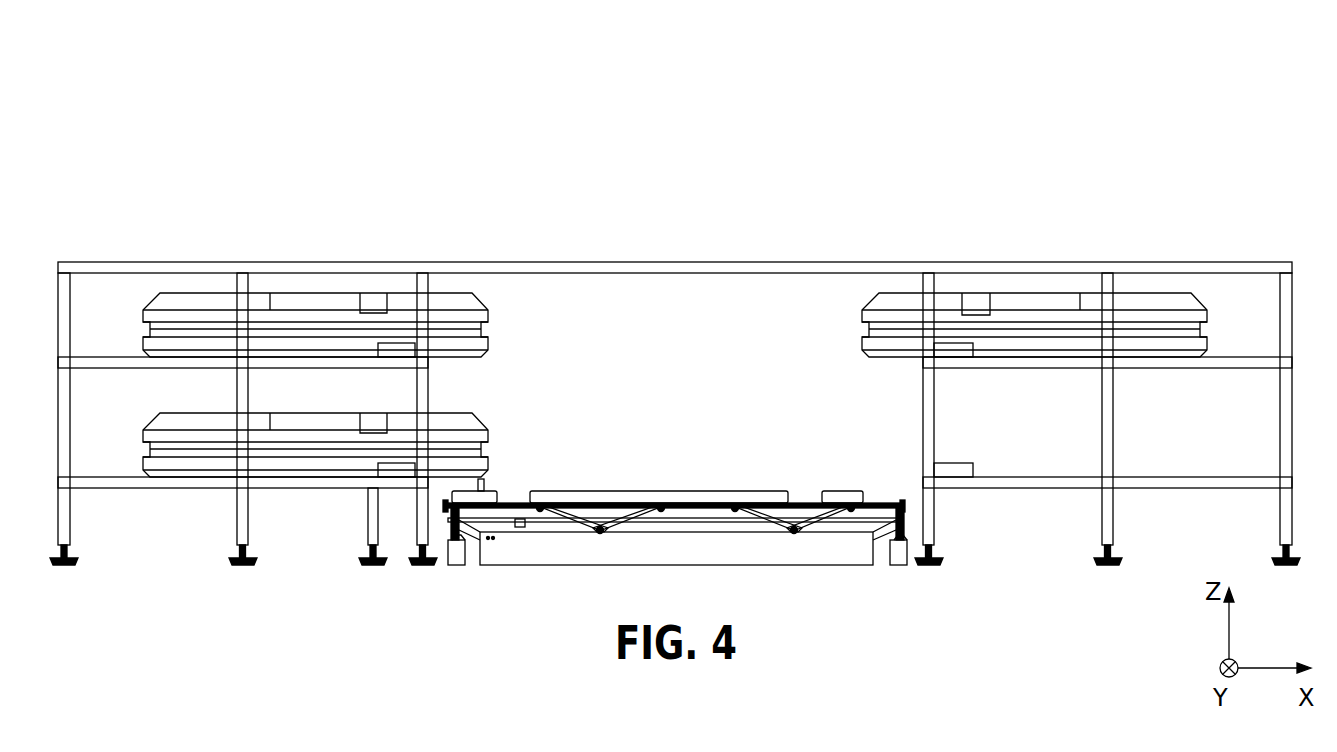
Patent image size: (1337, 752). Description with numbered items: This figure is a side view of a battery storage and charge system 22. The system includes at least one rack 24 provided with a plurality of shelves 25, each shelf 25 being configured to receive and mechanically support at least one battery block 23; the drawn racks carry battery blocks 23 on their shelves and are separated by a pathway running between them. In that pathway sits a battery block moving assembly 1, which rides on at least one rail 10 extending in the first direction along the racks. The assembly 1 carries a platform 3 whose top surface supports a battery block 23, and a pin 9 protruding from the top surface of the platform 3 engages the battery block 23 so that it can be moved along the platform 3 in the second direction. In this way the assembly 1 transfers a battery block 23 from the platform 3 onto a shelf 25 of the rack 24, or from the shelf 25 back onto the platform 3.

The battery block moving assembly 1 is at (823, 535).
The platform 3 is at (636, 491).
The pin 9 is at (486, 487).
The rail 10 is at (898, 556).
The battery storage and charge system 22 is at (1254, 141).
The battery block 23 is at (1140, 302).
The rack 24 is at (993, 268).
The shelf 25 is at (1245, 363).